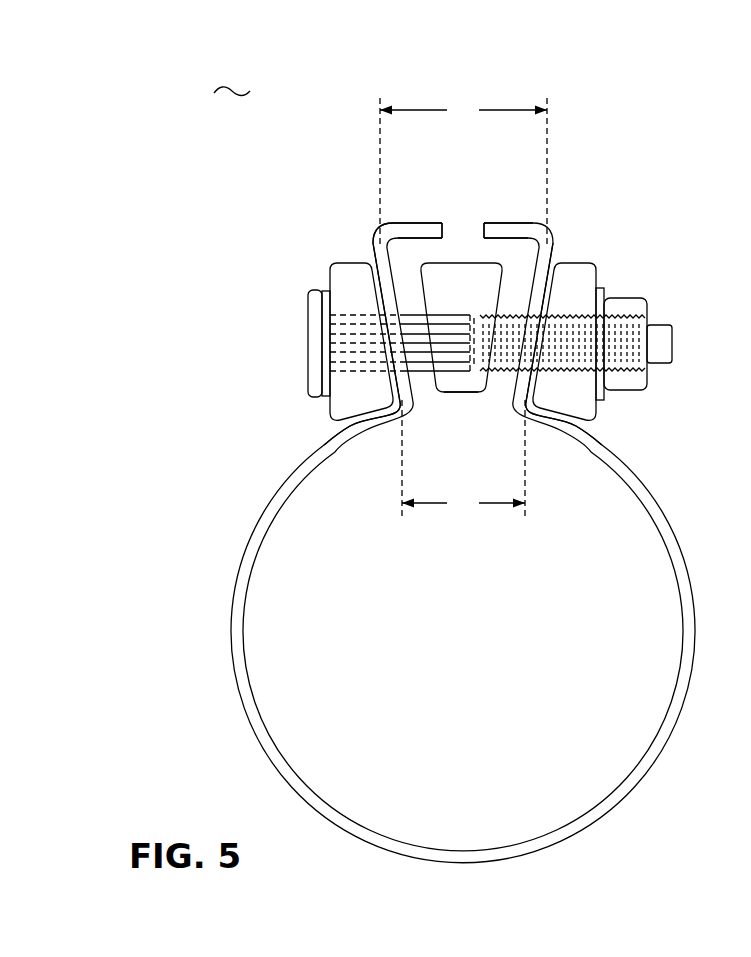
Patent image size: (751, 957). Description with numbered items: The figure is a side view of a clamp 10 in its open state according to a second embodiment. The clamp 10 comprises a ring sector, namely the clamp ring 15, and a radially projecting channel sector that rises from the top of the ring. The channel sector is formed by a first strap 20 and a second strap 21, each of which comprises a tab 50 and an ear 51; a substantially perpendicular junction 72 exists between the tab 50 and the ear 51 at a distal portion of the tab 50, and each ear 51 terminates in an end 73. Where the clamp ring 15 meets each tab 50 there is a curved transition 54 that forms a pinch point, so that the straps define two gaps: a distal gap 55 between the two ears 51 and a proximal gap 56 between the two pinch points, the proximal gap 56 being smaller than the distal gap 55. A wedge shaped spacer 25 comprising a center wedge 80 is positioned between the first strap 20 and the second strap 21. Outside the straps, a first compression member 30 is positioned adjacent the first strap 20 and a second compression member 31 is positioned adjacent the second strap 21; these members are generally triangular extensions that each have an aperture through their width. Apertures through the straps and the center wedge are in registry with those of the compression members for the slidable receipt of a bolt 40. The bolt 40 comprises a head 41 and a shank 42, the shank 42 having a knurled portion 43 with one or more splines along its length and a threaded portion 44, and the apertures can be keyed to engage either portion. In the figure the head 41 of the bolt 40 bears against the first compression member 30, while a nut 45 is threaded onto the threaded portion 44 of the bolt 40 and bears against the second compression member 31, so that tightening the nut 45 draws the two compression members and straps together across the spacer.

The clamp 10 is at (232, 79).
The clamp ring 15 is at (249, 730).
The first strap 20 is at (357, 135).
The second strap 21 is at (592, 135).
The wedge shaped spacer 25 is at (443, 403).
The first compression member 30 is at (352, 283).
The second compression member 31 is at (578, 280).
The bolt 40 is at (473, 347).
The head 41 is at (316, 372).
The shank 42 is at (686, 330).
The knurled portion 43 is at (416, 325).
The threaded portion 44 is at (505, 360).
The nut 45 is at (632, 300).
The tab 50 is at (382, 260).
The ear 51 is at (414, 232).
The curved transition 54 is at (398, 420).
The distal gap 55 is at (463, 171).
The proximal gap 56 is at (463, 460).
The substantially perpendicular junction 72 is at (381, 235).
The end 73 is at (428, 219).
The center wedge 80 is at (463, 405).